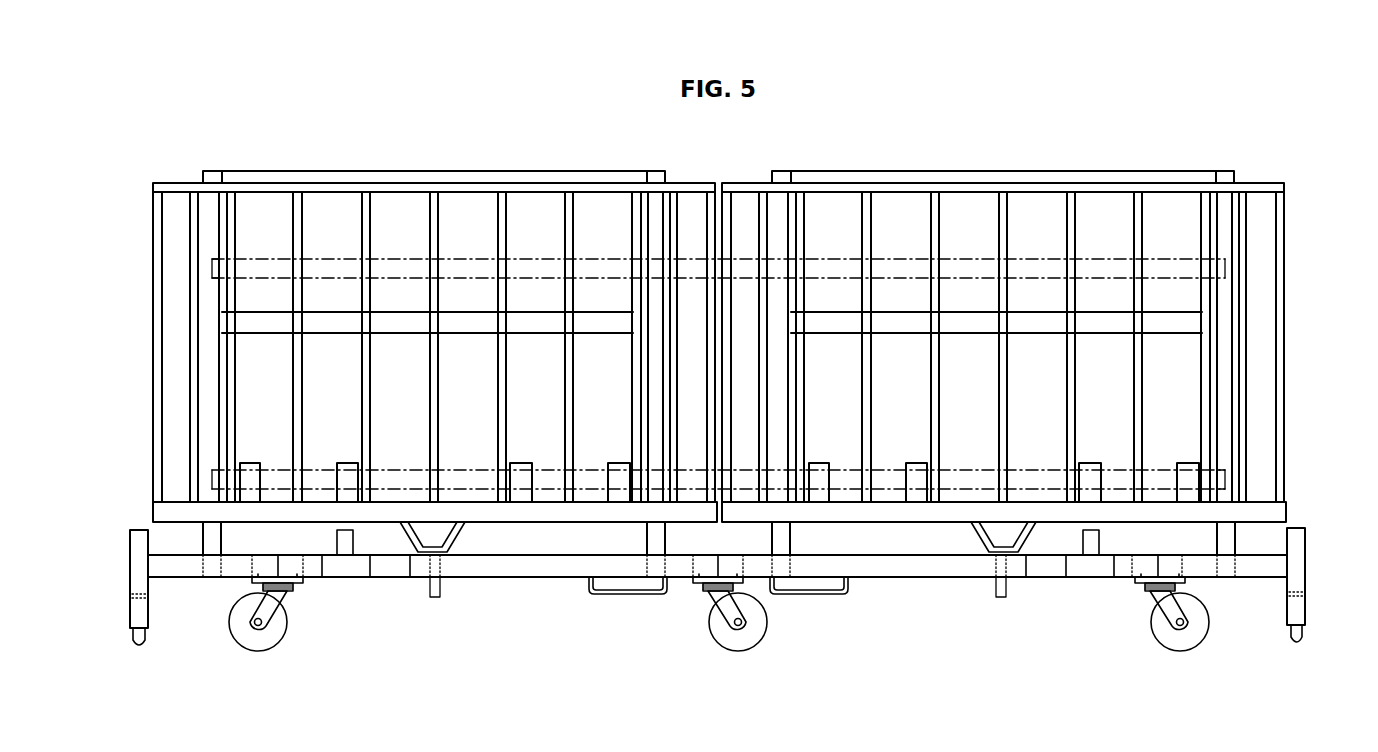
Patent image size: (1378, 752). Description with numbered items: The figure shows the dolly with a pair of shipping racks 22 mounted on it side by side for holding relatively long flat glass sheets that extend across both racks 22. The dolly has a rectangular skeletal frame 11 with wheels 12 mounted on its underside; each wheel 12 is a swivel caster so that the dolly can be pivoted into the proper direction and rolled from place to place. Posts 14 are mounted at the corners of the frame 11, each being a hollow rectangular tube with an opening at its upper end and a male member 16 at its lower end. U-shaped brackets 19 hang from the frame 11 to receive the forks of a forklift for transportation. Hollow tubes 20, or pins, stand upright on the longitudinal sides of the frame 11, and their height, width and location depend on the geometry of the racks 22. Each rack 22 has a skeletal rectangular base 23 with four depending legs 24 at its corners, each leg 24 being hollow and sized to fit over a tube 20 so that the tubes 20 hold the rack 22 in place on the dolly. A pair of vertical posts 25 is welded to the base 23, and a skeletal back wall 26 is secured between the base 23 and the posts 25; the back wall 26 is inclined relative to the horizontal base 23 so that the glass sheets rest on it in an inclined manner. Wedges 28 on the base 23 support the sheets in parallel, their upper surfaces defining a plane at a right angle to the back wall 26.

The frame 11 is at (535, 567).
The wheel 12 is at (275, 637).
The post 14 is at (138, 562).
The male member 16 is at (133, 636).
The U-shaped bracket 19 is at (630, 595).
The hollow tube 20 is at (208, 568).
The rack 22 is at (345, 177).
The base 23 is at (548, 511).
The leg 24 is at (216, 543).
The vertical post 25 is at (213, 178).
The back wall 26 is at (141, 257).
The wedge 28 is at (250, 468).